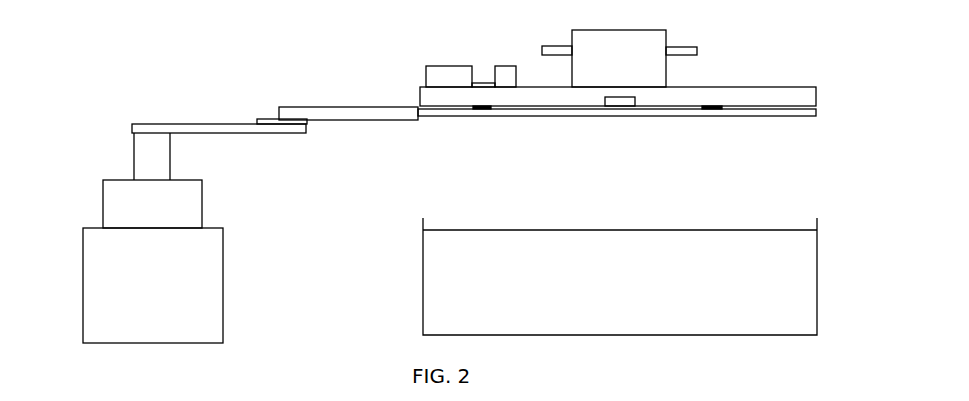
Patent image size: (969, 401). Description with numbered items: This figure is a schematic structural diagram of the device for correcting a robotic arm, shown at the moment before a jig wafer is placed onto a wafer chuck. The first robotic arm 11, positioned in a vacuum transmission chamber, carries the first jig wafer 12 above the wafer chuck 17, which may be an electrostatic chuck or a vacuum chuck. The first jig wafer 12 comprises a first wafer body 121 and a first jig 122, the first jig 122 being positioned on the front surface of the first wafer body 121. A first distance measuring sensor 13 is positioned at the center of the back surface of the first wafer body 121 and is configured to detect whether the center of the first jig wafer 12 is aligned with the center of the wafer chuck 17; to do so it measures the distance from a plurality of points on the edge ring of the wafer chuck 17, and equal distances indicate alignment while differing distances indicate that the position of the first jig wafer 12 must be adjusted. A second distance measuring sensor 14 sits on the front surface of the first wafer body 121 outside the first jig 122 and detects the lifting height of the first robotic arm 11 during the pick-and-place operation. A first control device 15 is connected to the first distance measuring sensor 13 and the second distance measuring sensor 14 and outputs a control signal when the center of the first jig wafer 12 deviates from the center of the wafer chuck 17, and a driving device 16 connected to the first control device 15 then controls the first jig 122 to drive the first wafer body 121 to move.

The first robotic arm 11 is at (110, 137).
The first jig wafer 12 is at (674, 63).
The first wafer body 121 is at (816, 95).
The first jig 122 is at (670, 43).
The first distance measuring sensor 13 is at (635, 101).
The second distance measuring sensor 14 is at (542, 48).
The first control device 15 is at (450, 65).
The driving device 16 is at (502, 65).
The wafer chuck 17 is at (817, 282).